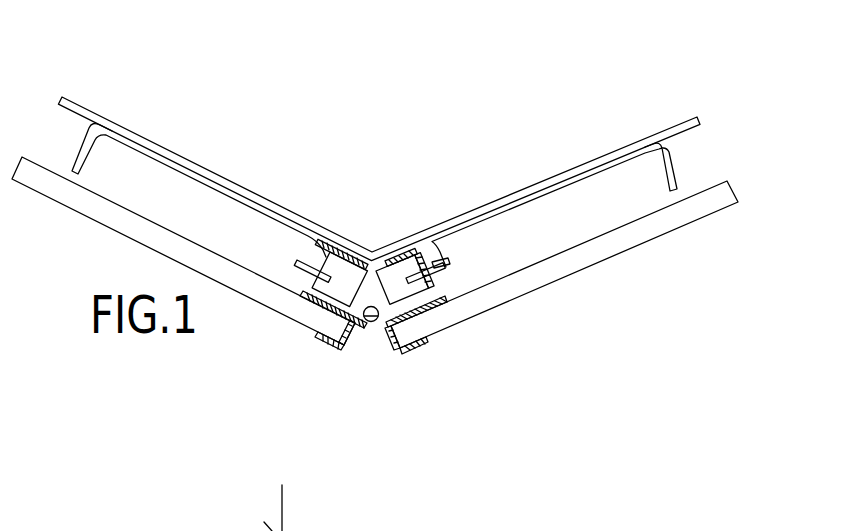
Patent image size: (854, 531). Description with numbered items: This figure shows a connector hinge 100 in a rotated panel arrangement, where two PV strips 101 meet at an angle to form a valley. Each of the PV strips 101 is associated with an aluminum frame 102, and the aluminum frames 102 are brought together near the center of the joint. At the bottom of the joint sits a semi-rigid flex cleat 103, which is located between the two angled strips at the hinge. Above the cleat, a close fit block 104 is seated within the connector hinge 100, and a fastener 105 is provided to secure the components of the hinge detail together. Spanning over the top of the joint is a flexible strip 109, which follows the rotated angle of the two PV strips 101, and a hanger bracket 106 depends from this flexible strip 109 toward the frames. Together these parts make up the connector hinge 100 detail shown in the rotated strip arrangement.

The connector hinge 100 is at (398, 400).
The PV strips 101 is at (636, 243).
The aluminum frames 102 is at (397, 345).
The semi-rigid flex cleat 103 is at (368, 323).
The close fit block 104 is at (361, 258).
The fastener 105 is at (439, 249).
The hanger bracket 106 is at (563, 185).
The flexible strip 109 is at (167, 148).